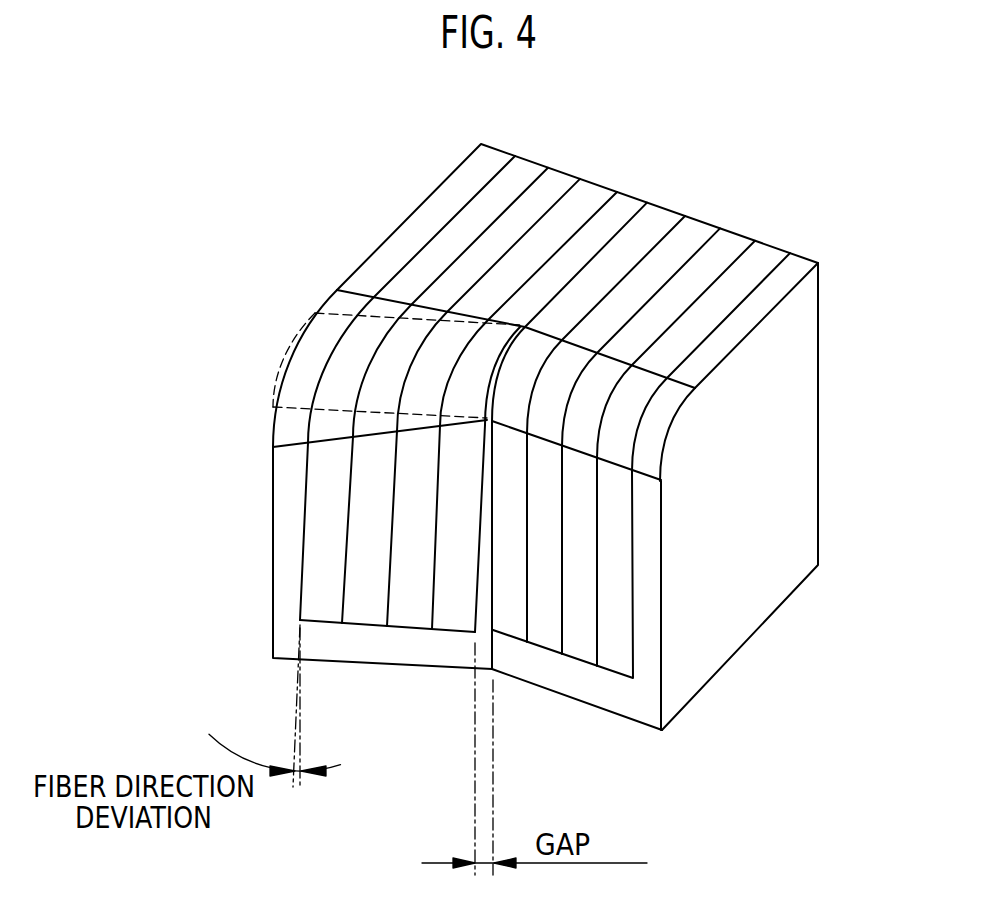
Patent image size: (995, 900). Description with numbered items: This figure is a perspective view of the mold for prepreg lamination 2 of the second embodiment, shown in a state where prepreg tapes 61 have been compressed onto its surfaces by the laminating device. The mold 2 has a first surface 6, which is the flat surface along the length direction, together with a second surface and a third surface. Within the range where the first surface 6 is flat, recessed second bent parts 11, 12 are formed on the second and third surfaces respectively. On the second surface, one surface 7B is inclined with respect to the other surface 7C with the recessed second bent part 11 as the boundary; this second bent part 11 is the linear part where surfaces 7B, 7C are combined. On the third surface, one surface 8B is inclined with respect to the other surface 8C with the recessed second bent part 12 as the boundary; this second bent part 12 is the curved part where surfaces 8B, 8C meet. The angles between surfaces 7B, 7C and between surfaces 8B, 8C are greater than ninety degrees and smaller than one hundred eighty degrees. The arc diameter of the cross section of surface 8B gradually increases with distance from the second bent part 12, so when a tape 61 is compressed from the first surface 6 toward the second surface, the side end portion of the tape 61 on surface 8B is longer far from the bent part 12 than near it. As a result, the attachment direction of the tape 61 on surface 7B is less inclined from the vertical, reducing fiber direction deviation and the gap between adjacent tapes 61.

The mold for prepreg lamination 2 is at (793, 383).
The first surface 6 is at (625, 205).
The prepreg tape 61 is at (528, 170).
The one surface of the third surface 8B is at (270, 431).
The other surface of the third surface 8C is at (660, 434).
The one surface of the second surface 7B is at (411, 655).
The other surface of the second surface 7C is at (604, 695).
The recessed second bent part 11 is at (490, 505).
The recessed second bent part 12 is at (508, 340).